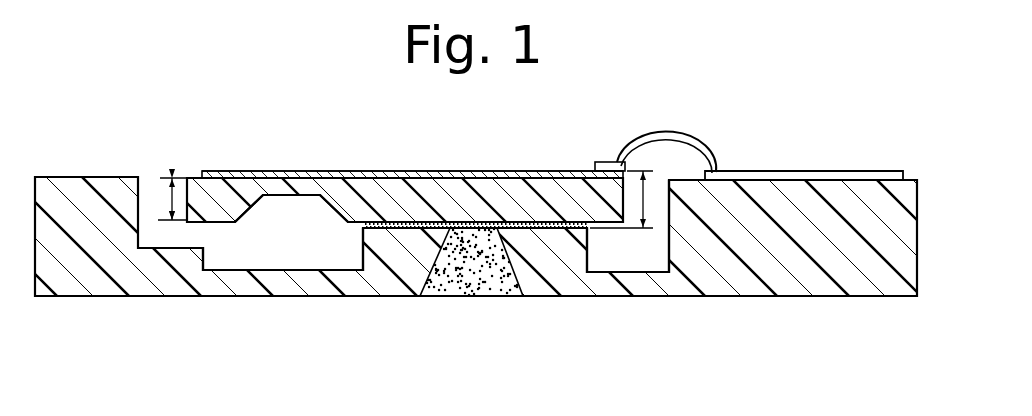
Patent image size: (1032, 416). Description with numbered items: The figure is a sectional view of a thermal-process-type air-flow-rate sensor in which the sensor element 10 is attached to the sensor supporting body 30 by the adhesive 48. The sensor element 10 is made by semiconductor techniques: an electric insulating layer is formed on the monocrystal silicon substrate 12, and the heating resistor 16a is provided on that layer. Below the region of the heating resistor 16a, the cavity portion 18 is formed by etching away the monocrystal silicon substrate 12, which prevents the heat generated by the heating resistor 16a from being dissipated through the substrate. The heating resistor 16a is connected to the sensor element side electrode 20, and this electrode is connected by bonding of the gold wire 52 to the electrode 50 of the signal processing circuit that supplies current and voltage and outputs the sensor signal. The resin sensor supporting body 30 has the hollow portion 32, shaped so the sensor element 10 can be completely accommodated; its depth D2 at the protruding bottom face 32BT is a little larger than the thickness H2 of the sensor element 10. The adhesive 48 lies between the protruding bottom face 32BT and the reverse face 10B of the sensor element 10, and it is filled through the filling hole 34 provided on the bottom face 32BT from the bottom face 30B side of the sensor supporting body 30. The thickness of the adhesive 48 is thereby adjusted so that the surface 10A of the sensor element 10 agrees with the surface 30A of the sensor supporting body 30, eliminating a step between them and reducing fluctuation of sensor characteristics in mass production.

The sensor element 10 is at (409, 222).
The surface of sensor element 10A is at (306, 171).
The reverse face of sensor element 10B is at (353, 235).
The monocrystal silicon substrate 12 is at (473, 183).
The heating resistor 16a is at (383, 171).
The cavity portion 18 is at (287, 205).
The sensor element side electrode 20 is at (603, 162).
The sensor supporting body 30 is at (140, 296).
The surface of sensor supporting body 30A is at (763, 180).
The bottom face of supporting body 30B is at (840, 297).
The hollow portion 32 is at (667, 248).
The protruding bottom face of hollow portion 32BT is at (550, 222).
The filling hole 34 is at (450, 296).
The adhesive 48 is at (527, 230).
The electrode 50 is at (847, 171).
The gold wire 52 is at (699, 143).
The thickness of sensor element H2 is at (163, 178).
The depth of hollow portion D2 is at (645, 208).